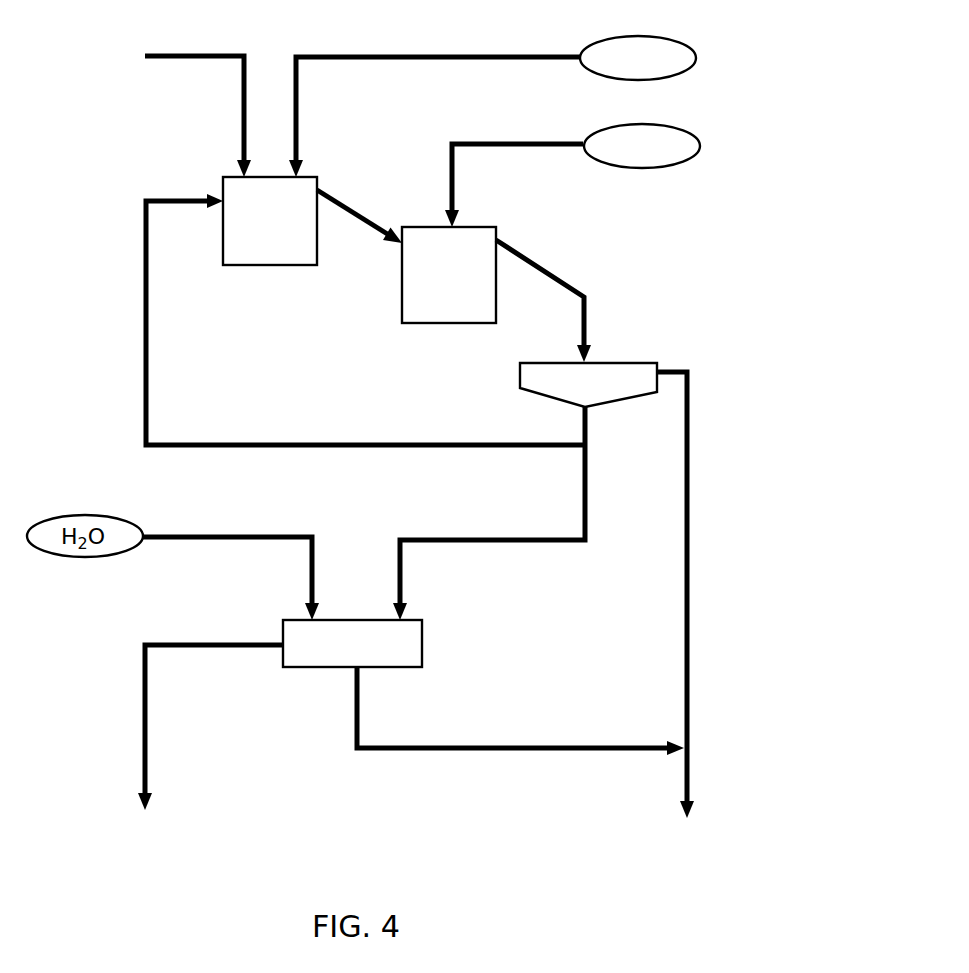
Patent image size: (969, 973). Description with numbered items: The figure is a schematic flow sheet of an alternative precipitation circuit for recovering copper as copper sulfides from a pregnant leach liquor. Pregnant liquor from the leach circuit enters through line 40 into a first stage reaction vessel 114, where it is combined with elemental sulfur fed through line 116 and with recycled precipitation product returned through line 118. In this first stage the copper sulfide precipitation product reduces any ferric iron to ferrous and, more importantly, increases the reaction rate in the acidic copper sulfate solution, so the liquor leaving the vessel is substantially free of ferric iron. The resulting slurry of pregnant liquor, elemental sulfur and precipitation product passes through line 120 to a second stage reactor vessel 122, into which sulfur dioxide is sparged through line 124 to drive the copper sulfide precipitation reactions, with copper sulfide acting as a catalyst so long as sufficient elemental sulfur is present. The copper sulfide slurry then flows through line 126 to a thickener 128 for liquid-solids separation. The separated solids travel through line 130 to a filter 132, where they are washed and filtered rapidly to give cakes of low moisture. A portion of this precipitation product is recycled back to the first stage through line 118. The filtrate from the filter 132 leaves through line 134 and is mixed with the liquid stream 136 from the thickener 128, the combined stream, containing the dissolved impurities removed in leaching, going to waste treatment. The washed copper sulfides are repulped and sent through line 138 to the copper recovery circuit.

The line 40 is at (201, 54).
The first stage reaction vessel 114 is at (270, 221).
The line 116 is at (415, 56).
The line 118 is at (148, 353).
The line 120 is at (353, 208).
The second stage reactor vessel 122 is at (449, 275).
The line 124 is at (521, 146).
The line 126 is at (556, 278).
The thickener 128 is at (588, 385).
The line 130 is at (497, 542).
The filter 132 is at (352, 643).
The line 134 is at (461, 750).
The liquid stream 136 is at (686, 586).
The line 138 is at (147, 719).